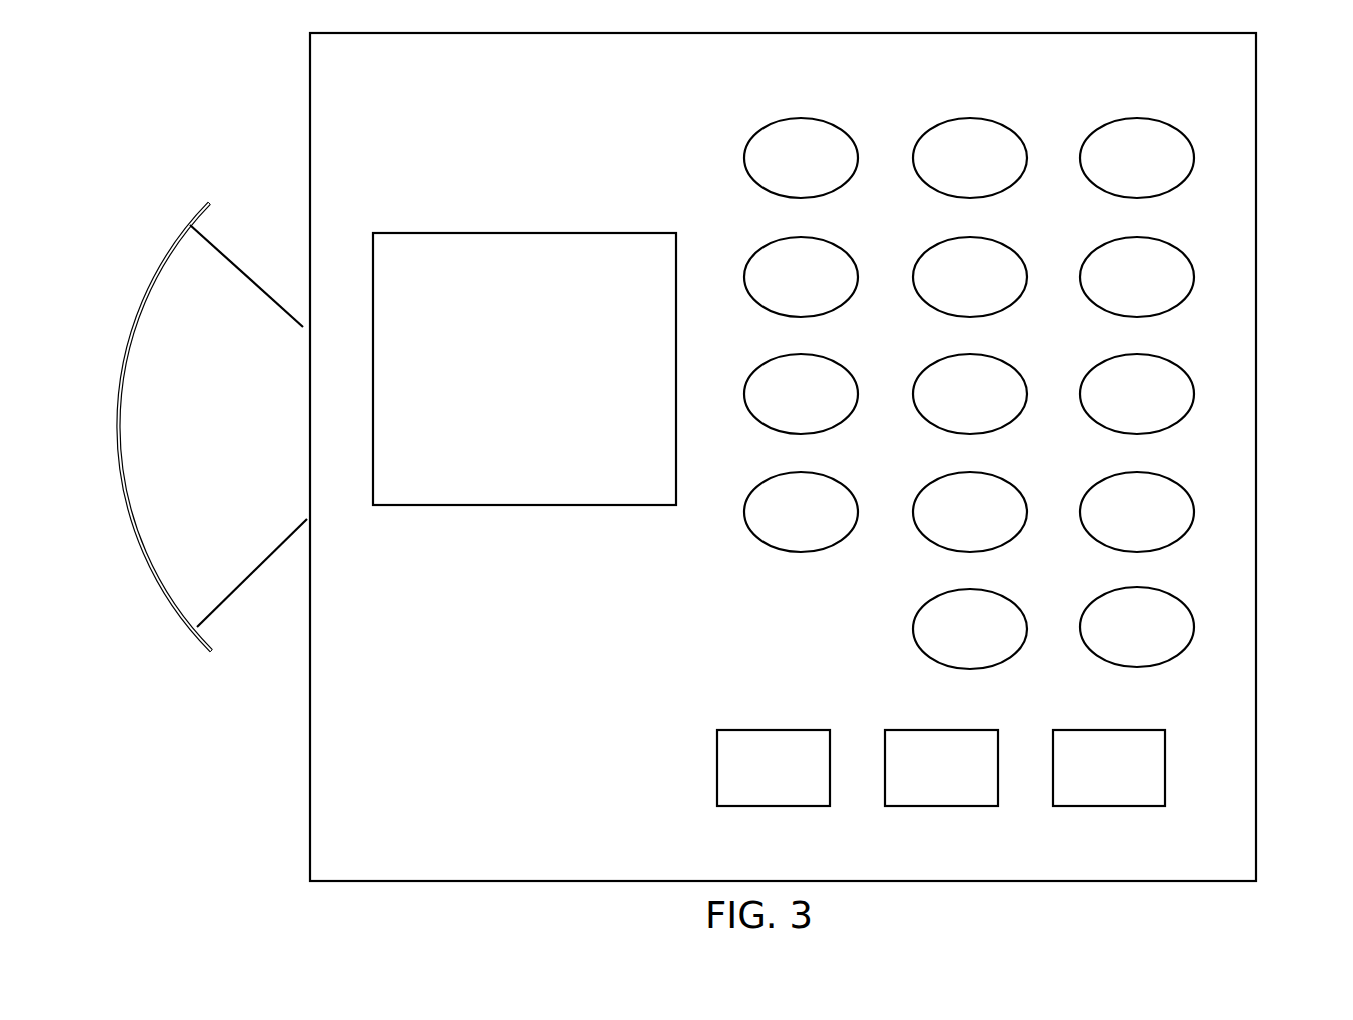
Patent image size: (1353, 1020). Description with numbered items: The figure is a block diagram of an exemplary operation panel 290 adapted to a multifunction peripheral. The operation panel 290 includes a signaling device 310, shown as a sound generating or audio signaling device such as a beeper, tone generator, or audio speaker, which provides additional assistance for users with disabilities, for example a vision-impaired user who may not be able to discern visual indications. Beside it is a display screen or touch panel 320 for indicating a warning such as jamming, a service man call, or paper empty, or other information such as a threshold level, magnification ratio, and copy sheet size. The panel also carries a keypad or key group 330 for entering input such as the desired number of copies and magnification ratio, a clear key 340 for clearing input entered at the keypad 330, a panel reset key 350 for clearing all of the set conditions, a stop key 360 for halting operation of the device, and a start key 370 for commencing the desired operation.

The operation panel 290 is at (265, 119).
The signaling device 310 is at (118, 418).
The touch panel 320 is at (487, 232).
The keypad 330 is at (1223, 107).
The clear key 340 is at (1193, 627).
The panel reset key 350 is at (1090, 730).
The stop key 360 is at (942, 730).
The start key 370 is at (773, 730).